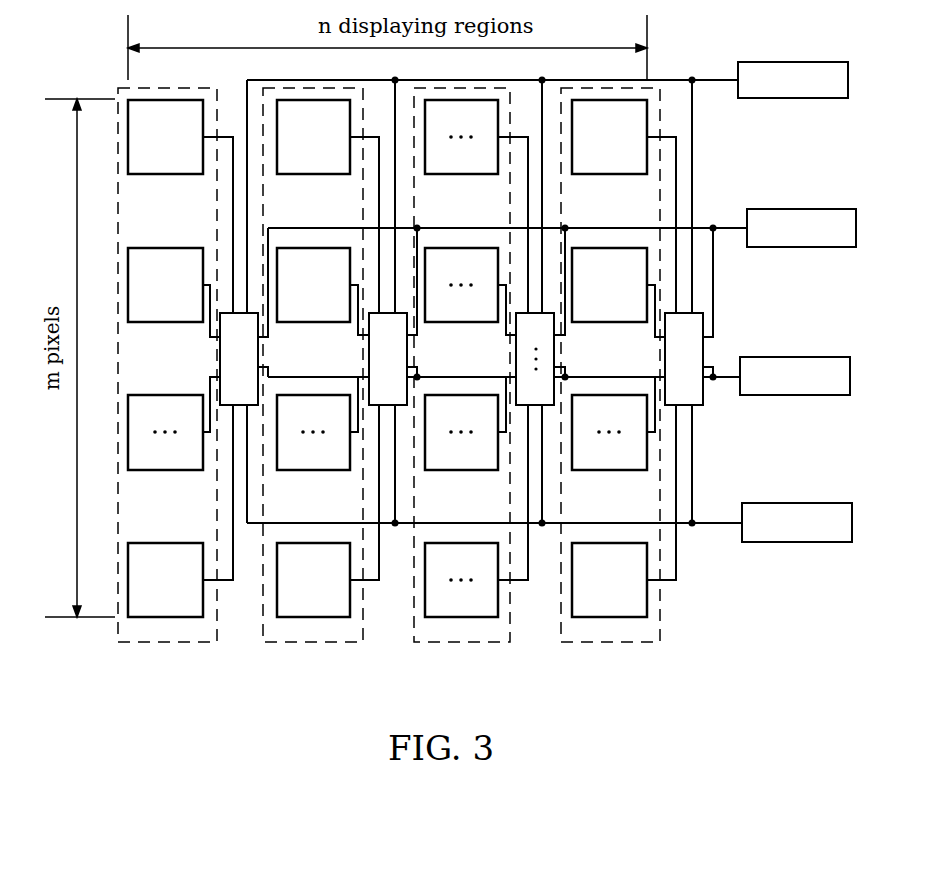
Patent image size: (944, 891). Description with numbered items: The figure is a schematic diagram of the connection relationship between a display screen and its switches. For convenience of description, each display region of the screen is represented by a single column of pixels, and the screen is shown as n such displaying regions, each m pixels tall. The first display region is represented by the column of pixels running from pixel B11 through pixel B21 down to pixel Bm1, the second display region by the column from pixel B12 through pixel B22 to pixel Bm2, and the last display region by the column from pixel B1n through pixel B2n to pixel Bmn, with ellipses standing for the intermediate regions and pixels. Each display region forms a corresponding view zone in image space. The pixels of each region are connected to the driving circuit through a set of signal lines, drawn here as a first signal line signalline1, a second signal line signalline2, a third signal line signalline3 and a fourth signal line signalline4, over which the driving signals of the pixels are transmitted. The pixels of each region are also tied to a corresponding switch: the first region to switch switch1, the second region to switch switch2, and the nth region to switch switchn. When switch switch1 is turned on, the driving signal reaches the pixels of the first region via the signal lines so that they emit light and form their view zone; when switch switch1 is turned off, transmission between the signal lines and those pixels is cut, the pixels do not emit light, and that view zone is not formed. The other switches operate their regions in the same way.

The pixel B11 is at (165, 137).
The pixel B12 is at (313, 137).
The pixel B1n is at (609, 137).
The pixel B21 is at (165, 285).
The pixel B22 is at (313, 285).
The pixel B2n is at (609, 285).
The pixel Bm1 is at (165, 580).
The pixel Bm2 is at (313, 580).
The pixel Bmn is at (609, 580).
The switch switch1 is at (239, 359).
The switch switch2 is at (388, 359).
The switch switchn is at (684, 359).
The signal line signalline1 is at (793, 80).
The signal line signalline2 is at (801, 228).
The signal line signalline3 is at (795, 376).
The signal line signalline4 is at (797, 522).